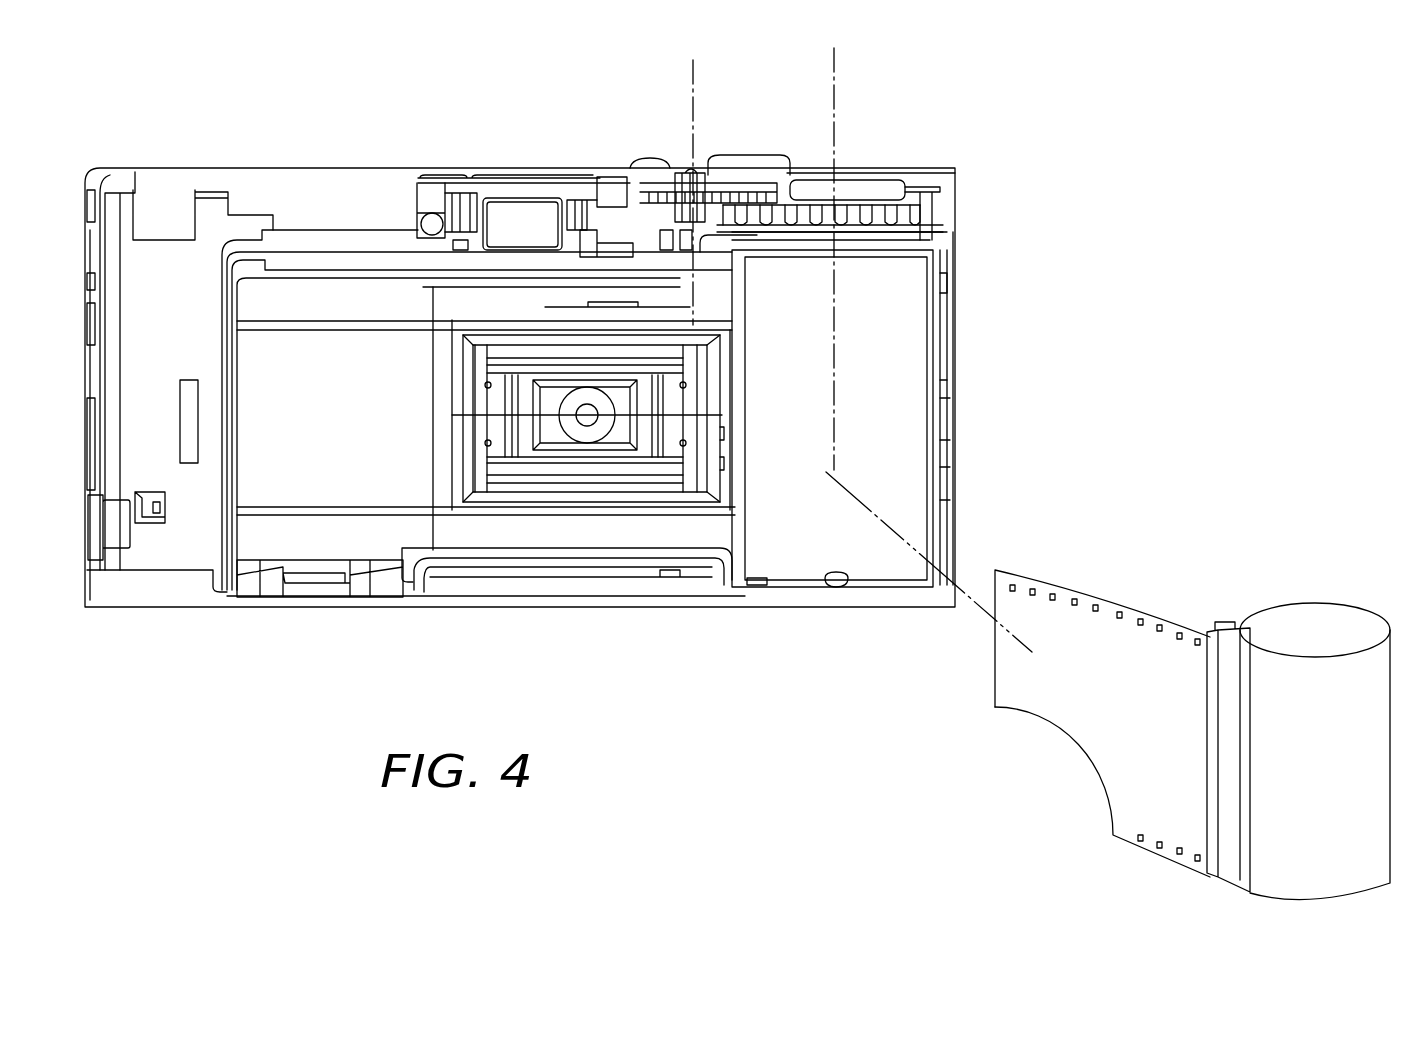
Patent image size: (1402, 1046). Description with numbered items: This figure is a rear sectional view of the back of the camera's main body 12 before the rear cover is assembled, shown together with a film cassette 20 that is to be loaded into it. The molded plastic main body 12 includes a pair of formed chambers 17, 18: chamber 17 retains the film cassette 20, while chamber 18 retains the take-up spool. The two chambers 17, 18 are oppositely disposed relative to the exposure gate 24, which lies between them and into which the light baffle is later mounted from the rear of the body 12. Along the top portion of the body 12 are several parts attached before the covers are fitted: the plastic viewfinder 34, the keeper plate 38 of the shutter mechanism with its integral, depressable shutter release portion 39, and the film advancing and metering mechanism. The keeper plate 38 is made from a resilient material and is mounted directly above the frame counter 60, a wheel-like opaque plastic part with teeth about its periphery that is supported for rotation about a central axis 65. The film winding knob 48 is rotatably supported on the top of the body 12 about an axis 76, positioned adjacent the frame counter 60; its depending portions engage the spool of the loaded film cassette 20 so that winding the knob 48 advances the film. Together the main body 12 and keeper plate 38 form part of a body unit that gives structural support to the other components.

The main body 12 is at (640, 540).
The chamber 17 is at (800, 557).
The chamber 18 is at (410, 481).
The film cassette 20 is at (1270, 603).
The exposure gate 24 is at (520, 465).
The viewfinder 34 is at (528, 210).
The keeper plate 38 is at (885, 183).
The shutter release portion 39 is at (748, 155).
The film winding knob 48 is at (933, 197).
The frame counter 60 is at (668, 193).
The central axis 65 is at (694, 97).
The axis 76 is at (834, 90).